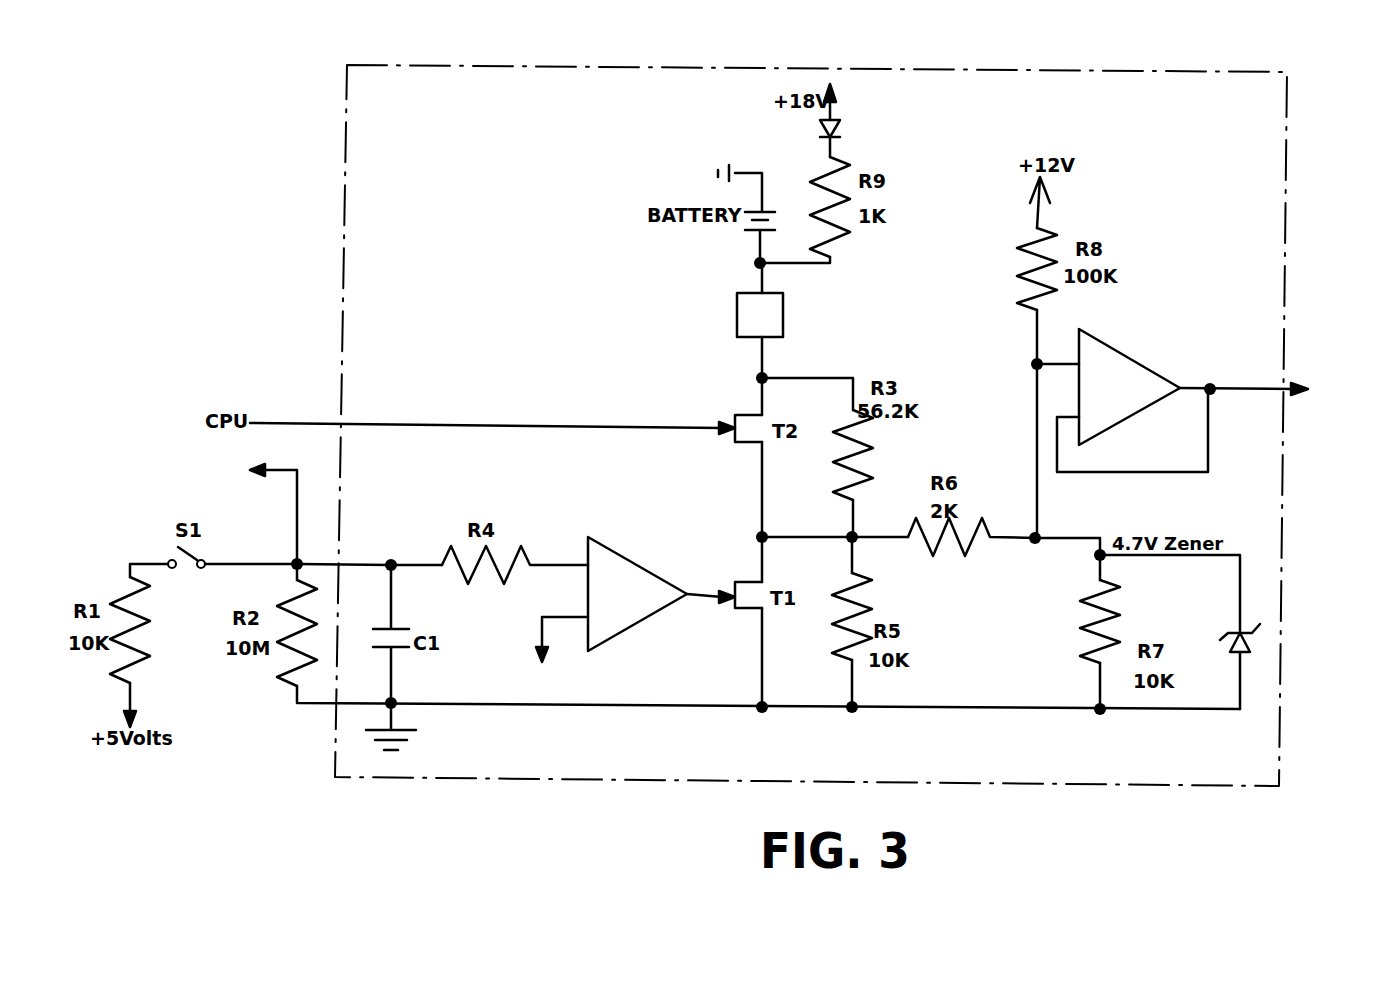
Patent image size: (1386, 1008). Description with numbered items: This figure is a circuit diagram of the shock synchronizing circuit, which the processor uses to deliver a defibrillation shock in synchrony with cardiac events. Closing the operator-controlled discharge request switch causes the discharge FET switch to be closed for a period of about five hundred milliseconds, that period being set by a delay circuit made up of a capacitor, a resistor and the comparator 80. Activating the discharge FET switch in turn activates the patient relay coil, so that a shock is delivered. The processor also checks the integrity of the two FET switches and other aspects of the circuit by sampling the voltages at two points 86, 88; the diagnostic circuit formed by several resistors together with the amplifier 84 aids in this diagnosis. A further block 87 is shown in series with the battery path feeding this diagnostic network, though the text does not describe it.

The comparator 80 is at (643, 568).
The amplifier 84 is at (1125, 357).
The voltage sampling point 86 is at (297, 512).
The battery monitor block 87 is at (737, 313).
The voltage sampling point 88 is at (1285, 393).